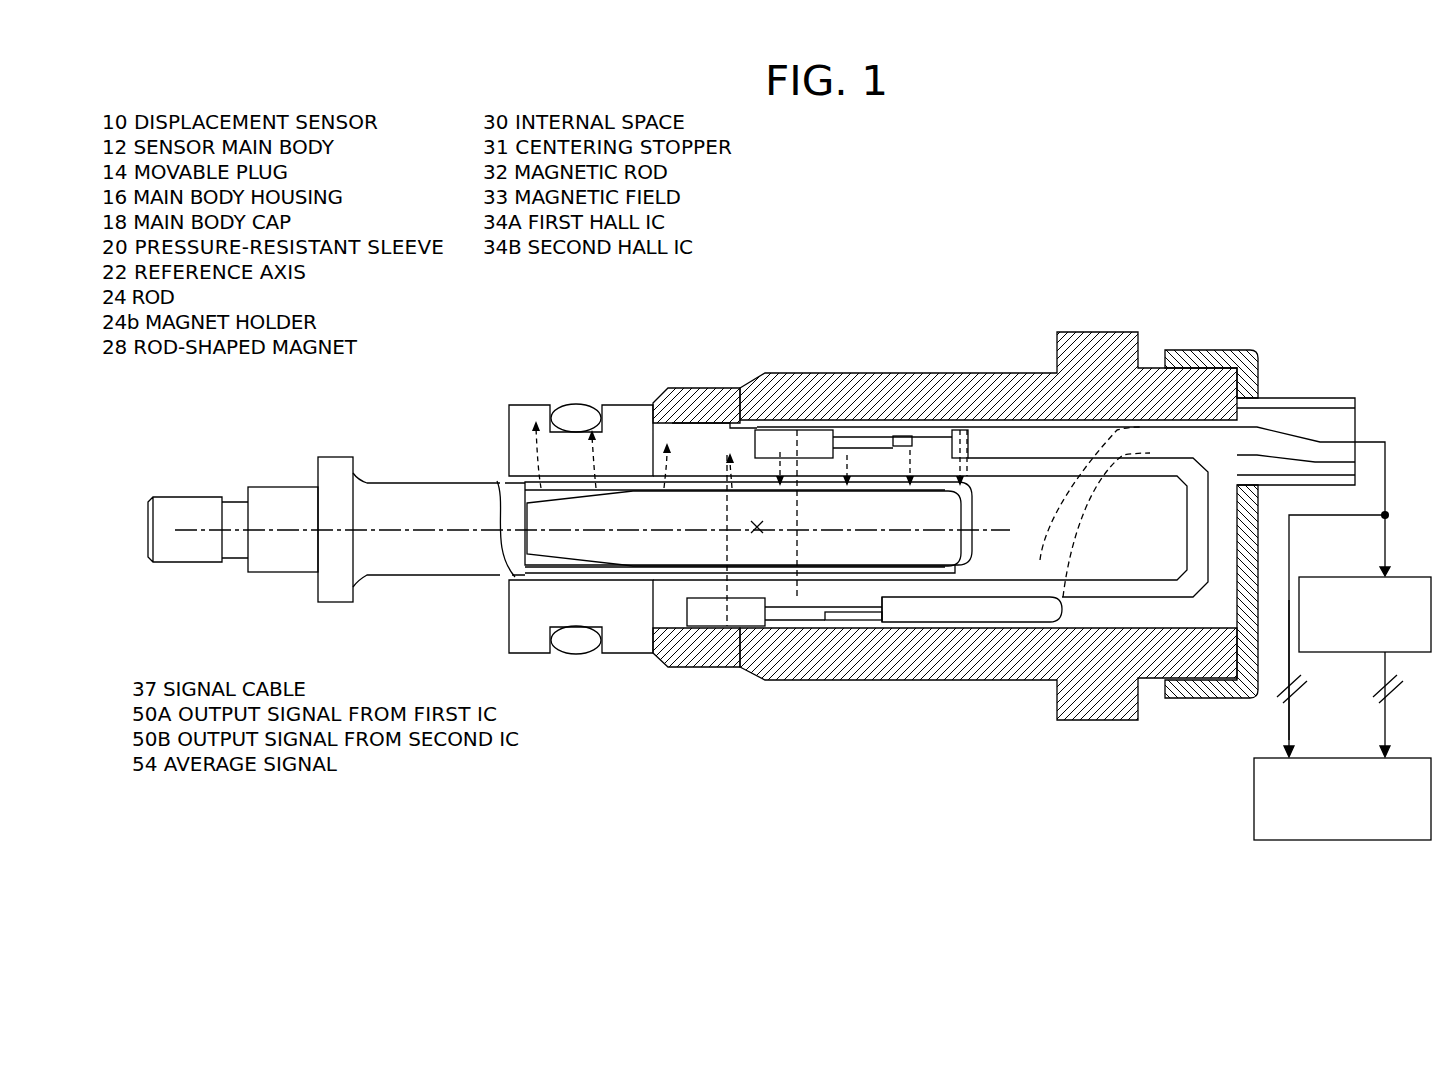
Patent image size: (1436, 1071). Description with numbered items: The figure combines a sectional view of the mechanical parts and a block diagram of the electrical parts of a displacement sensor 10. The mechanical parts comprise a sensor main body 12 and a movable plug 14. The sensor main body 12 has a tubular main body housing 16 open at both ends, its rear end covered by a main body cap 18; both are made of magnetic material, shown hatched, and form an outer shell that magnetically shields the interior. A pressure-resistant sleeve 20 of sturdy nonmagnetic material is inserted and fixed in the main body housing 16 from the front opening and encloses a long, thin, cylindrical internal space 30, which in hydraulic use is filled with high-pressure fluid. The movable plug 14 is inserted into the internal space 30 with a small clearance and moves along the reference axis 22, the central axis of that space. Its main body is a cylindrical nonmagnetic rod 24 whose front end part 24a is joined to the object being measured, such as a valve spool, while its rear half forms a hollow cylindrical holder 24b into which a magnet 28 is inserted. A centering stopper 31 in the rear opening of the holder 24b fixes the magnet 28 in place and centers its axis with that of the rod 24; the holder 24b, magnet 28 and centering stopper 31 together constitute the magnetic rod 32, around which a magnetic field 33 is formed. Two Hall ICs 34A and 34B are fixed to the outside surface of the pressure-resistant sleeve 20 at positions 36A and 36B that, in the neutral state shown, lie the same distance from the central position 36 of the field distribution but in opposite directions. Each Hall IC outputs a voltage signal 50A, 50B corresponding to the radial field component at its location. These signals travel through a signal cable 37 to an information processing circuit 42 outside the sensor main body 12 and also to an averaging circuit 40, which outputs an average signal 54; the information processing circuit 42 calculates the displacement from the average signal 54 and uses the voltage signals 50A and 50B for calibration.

The displacement sensor 10 is at (739, 300).
The sensor main body 12 is at (915, 350).
The movable plug 14 is at (427, 476).
The main body housing 16 is at (945, 392).
The main body cap 18 is at (1186, 352).
The pressure-resistant sleeve 20 is at (622, 412).
The reference axis 22 is at (445, 535).
The rod 24 is at (378, 560).
The front end part 24a is at (205, 545).
The holder 24b is at (622, 578).
The magnet 28 is at (775, 567).
The internal space 30 is at (1018, 490).
The centering stopper 31 is at (975, 585).
The magnetic rod 32 is at (915, 730).
The magnetic field 33 is at (538, 452).
The first Hall IC 34A is at (782, 428).
The second Hall IC 34B is at (742, 598).
The central position 36 is at (768, 526).
The position of first Hall IC 36A is at (800, 548).
The position of second Hall IC 36B is at (725, 548).
The signal cable 37 is at (1297, 420).
The averaging circuit 40 is at (1356, 577).
The information processing circuit 42 is at (1254, 796).
The voltage signal from first Hall IC 50A is at (1289, 720).
The voltage signal from second Hall IC 50B is at (1289, 720).
The average signal 54 is at (1383, 718).